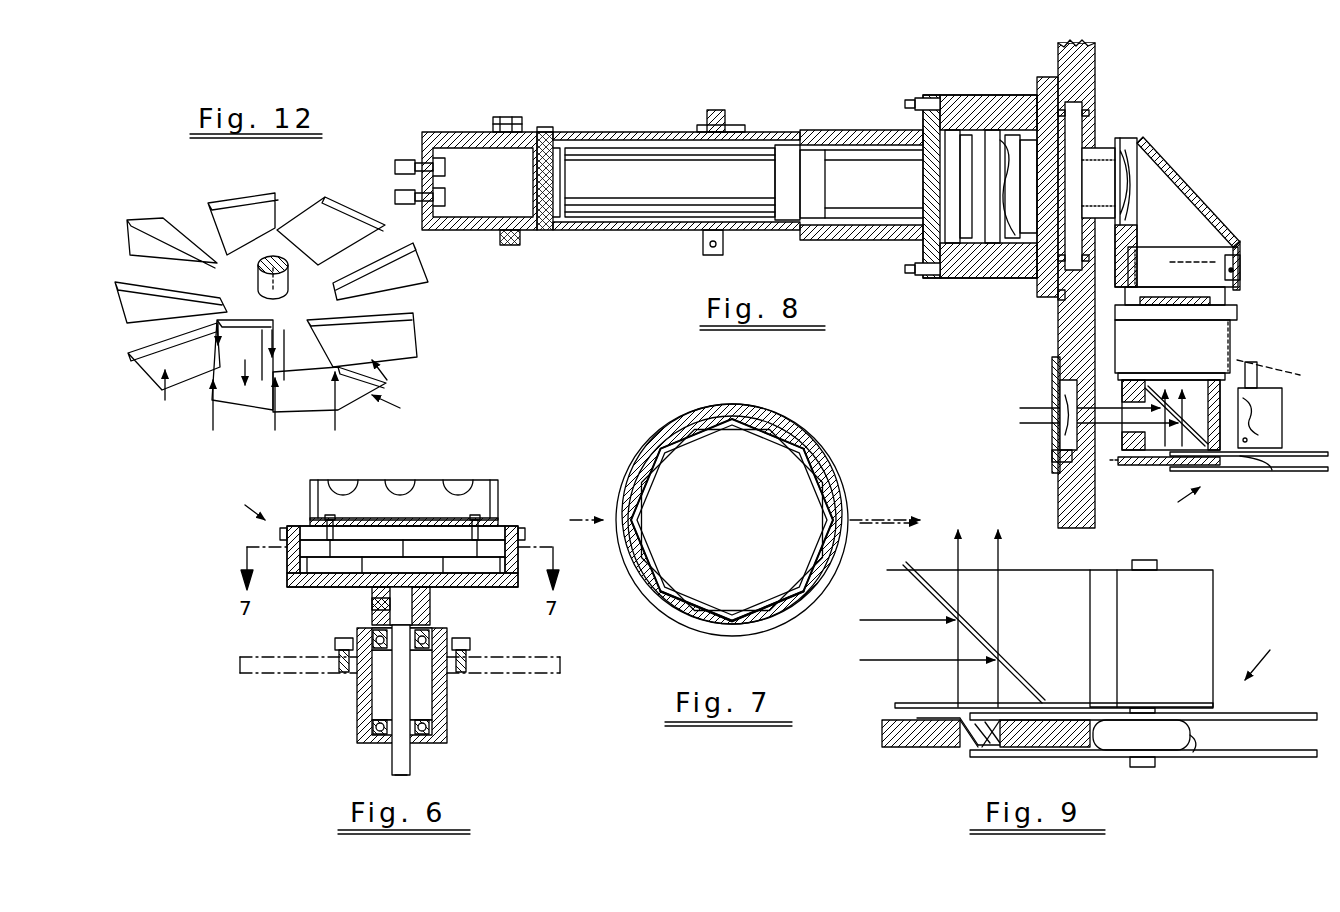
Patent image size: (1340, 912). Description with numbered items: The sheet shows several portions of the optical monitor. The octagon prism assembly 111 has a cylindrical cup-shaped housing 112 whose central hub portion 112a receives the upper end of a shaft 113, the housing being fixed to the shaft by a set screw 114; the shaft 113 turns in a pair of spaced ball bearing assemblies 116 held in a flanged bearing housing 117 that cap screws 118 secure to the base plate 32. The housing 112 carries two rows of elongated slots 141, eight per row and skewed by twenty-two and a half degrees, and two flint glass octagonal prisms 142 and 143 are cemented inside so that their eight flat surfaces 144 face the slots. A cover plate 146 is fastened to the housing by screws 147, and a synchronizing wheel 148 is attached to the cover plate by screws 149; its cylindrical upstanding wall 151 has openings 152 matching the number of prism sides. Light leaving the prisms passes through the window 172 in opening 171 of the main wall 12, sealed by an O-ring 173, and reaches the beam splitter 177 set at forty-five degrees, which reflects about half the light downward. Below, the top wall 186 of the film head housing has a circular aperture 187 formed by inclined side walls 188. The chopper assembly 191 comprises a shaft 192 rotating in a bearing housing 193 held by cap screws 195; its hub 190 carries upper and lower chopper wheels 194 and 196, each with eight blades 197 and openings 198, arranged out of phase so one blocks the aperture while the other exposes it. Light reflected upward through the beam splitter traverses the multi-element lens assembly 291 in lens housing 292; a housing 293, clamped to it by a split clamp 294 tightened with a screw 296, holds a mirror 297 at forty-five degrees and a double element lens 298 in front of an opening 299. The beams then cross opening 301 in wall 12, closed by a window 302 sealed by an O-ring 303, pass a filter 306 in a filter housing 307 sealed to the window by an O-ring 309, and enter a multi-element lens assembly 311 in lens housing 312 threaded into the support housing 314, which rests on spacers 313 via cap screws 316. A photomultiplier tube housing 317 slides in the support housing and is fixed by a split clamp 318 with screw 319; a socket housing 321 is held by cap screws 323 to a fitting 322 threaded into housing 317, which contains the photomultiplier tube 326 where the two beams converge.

In FIG. 8, the main wall 12 is at (1098, 58).
In FIG. 6, the base plate 32 is at (542, 680).
In FIG. 6, the octagon prism assembly 111 is at (245, 499).
In FIG. 7, the cylindrical cup-shaped housing 112 is at (848, 500).
In FIG. 6, the cylindrical cup-shaped housing 112 is at (300, 580).
In FIG. 6, the hub portion 112a is at (430, 610).
In FIG. 6, the shaft 113 is at (392, 628).
In FIG. 6, the set screw 114 is at (372, 604).
In FIG. 6, the ball bearing assemblies 116 is at (370, 680).
In FIG. 6, the flanged bearing housing 117 is at (447, 735).
In FIG. 6, the cap screws 118 is at (470, 640).
In FIG. 7, the elongated slots 141 is at (788, 424).
In FIG. 7, the octagonal prism 142 is at (732, 626).
In FIG. 6, the octagonal prism 142 is at (500, 548).
In FIG. 7, the octagonal prism 143 is at (690, 628).
In FIG. 6, the octagonal prism 143 is at (322, 575).
In FIG. 7, the flat surfaces 144 is at (775, 424).
In FIG. 6, the flat surfaces 144 is at (375, 555).
In FIG. 6, the cover plate 146 is at (298, 530).
In FIG. 6, the screws 147 is at (515, 520).
In FIG. 6, the synchronizing wheel 148 is at (498, 528).
In FIG. 6, the screws 149 is at (330, 515).
In FIG. 6, the cylindrical upstanding wall 151 is at (440, 485).
In FIG. 6, the openings 152 is at (405, 478).
In FIG. 8, the opening 171 is at (1055, 456).
In FIG. 8, the window 172 is at (1052, 362).
In FIG. 8, the O-ring 173 is at (1062, 426).
In FIG. 8, the beam splitter 177 is at (1172, 392).
In FIG. 9, the beam splitter 177 is at (1035, 690).
In FIG. 8, the top wall 186 is at (1145, 466).
In FIG. 9, the top wall 186 is at (884, 735).
In FIG. 9, the circular aperture 187 is at (990, 737).
In FIG. 9, the inclined side walls 188 is at (978, 742).
In FIG. 12, the hub 190 is at (262, 325).
In FIG. 8, the hub 190 is at (1270, 471).
In FIG. 9, the hub 190 is at (1194, 750).
In FIG. 8, the chopper assembly 191 is at (1177, 502).
In FIG. 9, the chopper assembly 191 is at (1271, 655).
In FIG. 12, the shaft 192 is at (288, 282).
In FIG. 8, the shaft 192 is at (1257, 378).
In FIG. 9, the shaft 192 is at (1152, 770).
In FIG. 8, the bearing housing 193 is at (1282, 420).
In FIG. 9, the bearing housing 193 is at (1205, 615).
In FIG. 12, the upper chopper wheel 194 is at (387, 380).
In FIG. 9, the upper chopper wheel 194 is at (1288, 713).
In FIG. 8, the cap screws 195 is at (1262, 420).
In FIG. 12, the lower chopper wheel 196 is at (400, 408).
In FIG. 9, the lower chopper wheel 196 is at (1290, 758).
In FIG. 12, the blades 197 is at (245, 200).
In FIG. 12, the openings 198 is at (280, 215).
In FIG. 8, the multi-element lens assembly 291 is at (1284, 370).
In FIG. 8, the lens housing 292 is at (1236, 335).
In FIG. 8, the housing 293 is at (1238, 238).
In FIG. 8, the split clamp 294 is at (1240, 279).
In FIG. 8, the screw 296 is at (1240, 262).
In FIG. 8, the mirror 297 is at (1185, 190).
In FIG. 8, the double element lens 298 is at (1140, 178).
In FIG. 8, the opening 299 is at (1118, 145).
In FIG. 8, the opening 301 is at (1096, 138).
In FIG. 8, the window 302 is at (1070, 62).
In FIG. 8, the O-ring 303 is at (1086, 110).
In FIG. 8, the filter 306 is at (1012, 135).
In FIG. 8, the filter housing 307 is at (1030, 100).
In FIG. 8, the O-ring 309 is at (1058, 294).
In FIG. 8, the multi-element lens assembly 311 is at (1008, 250).
In FIG. 8, the lens housing 312 is at (968, 248).
In FIG. 8, the spacers 313 is at (978, 95).
In FIG. 8, the support housing 314 is at (835, 240).
In FIG. 8, the cap screws 316 is at (912, 272).
In FIG. 8, the photomultiplier tube housing 317 is at (635, 232).
In FIG. 8, the split clamp 318 is at (728, 118).
In FIG. 8, the screw 319 is at (703, 250).
In FIG. 8, the socket housing 321 is at (470, 230).
In FIG. 8, the fitting 322 is at (545, 130).
In FIG. 8, the cap screws 323 is at (506, 117).
In FIG. 8, the photomultiplier tube 326 is at (683, 189).